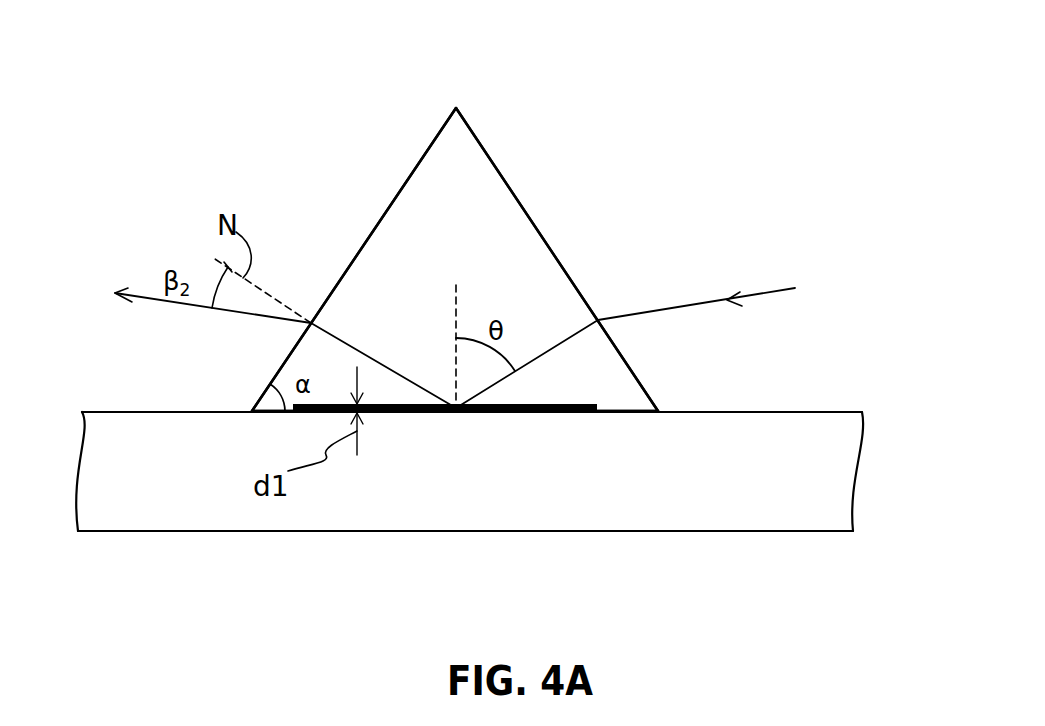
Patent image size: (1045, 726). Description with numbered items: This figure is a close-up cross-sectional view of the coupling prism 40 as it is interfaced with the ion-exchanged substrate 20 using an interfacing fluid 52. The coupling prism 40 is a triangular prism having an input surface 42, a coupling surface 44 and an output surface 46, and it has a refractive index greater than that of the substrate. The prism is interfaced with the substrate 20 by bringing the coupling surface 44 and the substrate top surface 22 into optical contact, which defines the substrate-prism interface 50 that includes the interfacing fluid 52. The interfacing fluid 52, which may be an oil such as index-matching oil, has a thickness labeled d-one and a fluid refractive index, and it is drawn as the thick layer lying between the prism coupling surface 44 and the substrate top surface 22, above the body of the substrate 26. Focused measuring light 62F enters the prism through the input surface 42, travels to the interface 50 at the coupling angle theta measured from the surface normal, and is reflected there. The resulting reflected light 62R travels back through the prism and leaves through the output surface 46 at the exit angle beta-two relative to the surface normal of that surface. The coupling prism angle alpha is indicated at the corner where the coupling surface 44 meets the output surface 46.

The substrate 20 is at (842, 378).
The substrate top surface 22 is at (715, 412).
The substrate body 26 is at (742, 488).
The coupling prism 40 is at (357, 64).
The input surface 42 is at (500, 165).
The coupling surface 44 is at (252, 412).
The output surface 46 is at (410, 172).
The substrate-prism interface 50 is at (490, 426).
The interfacing fluid 52 is at (570, 414).
The focused measuring light 62F is at (775, 288).
The reflected light 62R is at (148, 295).